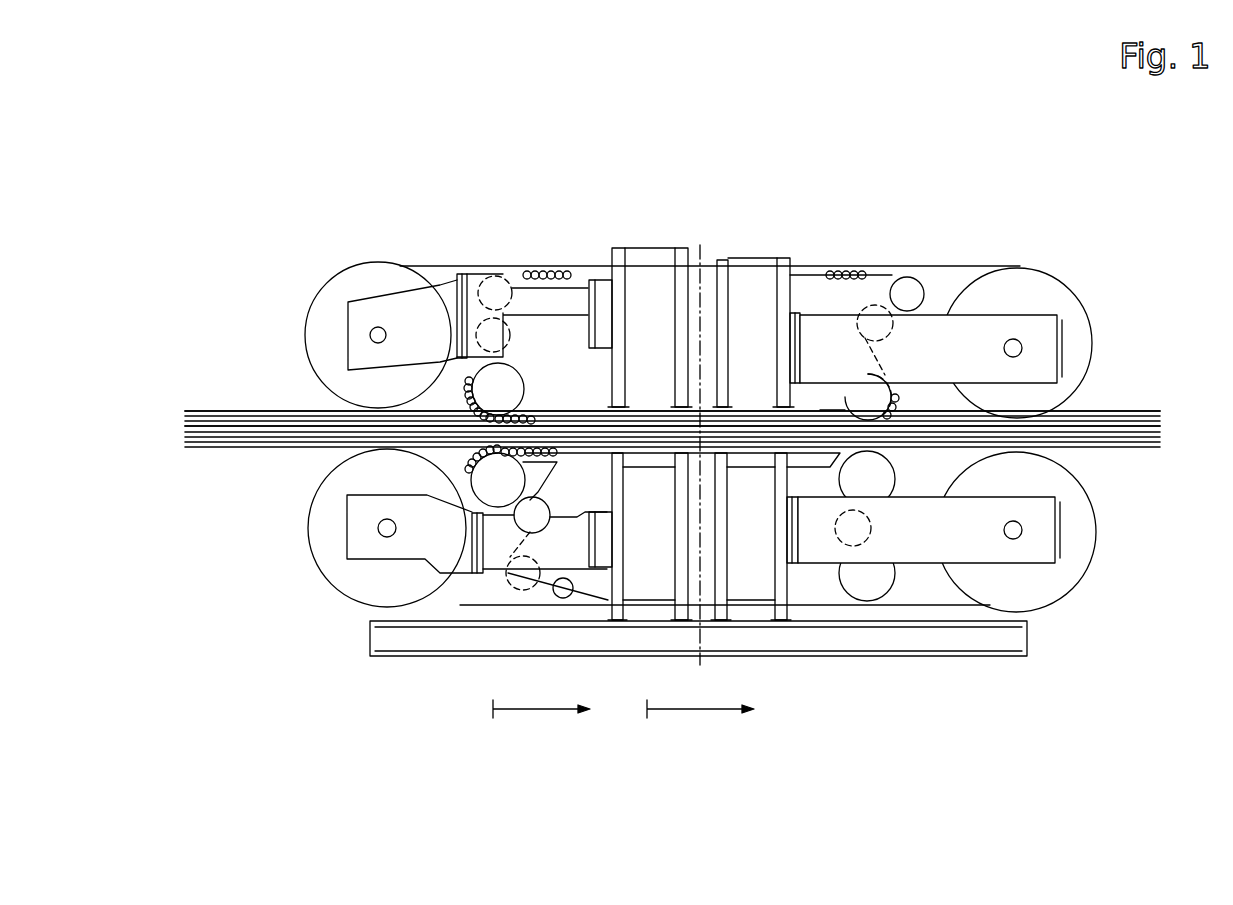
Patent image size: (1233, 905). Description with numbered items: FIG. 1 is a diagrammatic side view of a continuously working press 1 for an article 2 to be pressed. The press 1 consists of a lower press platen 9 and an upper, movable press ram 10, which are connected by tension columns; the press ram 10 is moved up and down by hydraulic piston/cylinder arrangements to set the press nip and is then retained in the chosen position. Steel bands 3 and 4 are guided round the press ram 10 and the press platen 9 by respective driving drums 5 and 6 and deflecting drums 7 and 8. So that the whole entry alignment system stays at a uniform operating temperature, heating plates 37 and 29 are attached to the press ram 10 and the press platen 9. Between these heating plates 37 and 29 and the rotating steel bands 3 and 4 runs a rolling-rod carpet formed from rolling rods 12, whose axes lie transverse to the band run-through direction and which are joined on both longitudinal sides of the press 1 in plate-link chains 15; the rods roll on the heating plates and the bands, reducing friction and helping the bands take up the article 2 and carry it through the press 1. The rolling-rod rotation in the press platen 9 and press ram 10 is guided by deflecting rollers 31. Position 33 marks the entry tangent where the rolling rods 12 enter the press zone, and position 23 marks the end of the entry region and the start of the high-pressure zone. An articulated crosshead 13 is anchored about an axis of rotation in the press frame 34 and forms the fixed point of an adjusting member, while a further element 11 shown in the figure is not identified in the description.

The continuously working press 1 is at (788, 253).
The article to be pressed 2 is at (226, 414).
The steel band 3 is at (528, 274).
The steel band 4 is at (953, 613).
The driving drum 5 is at (1033, 295).
The driving drum 6 is at (1042, 575).
The deflecting drum 7 is at (380, 298).
The deflecting drum 8 is at (350, 577).
The press platen 9 is at (750, 580).
The press ram 10 is at (645, 303).
The top web layer 11 is at (370, 413).
The rolling rods 12 is at (850, 268).
The articulated crosshead 13 is at (360, 338).
The plate-link chains 15 is at (583, 275).
The end of the entry region 23 is at (692, 723).
The heating plate 29 is at (558, 414).
The deflecting rollers 31 is at (493, 292).
The start of the entry region 33 is at (532, 723).
The press frame 34 is at (723, 282).
The heating plate 37 is at (557, 455).